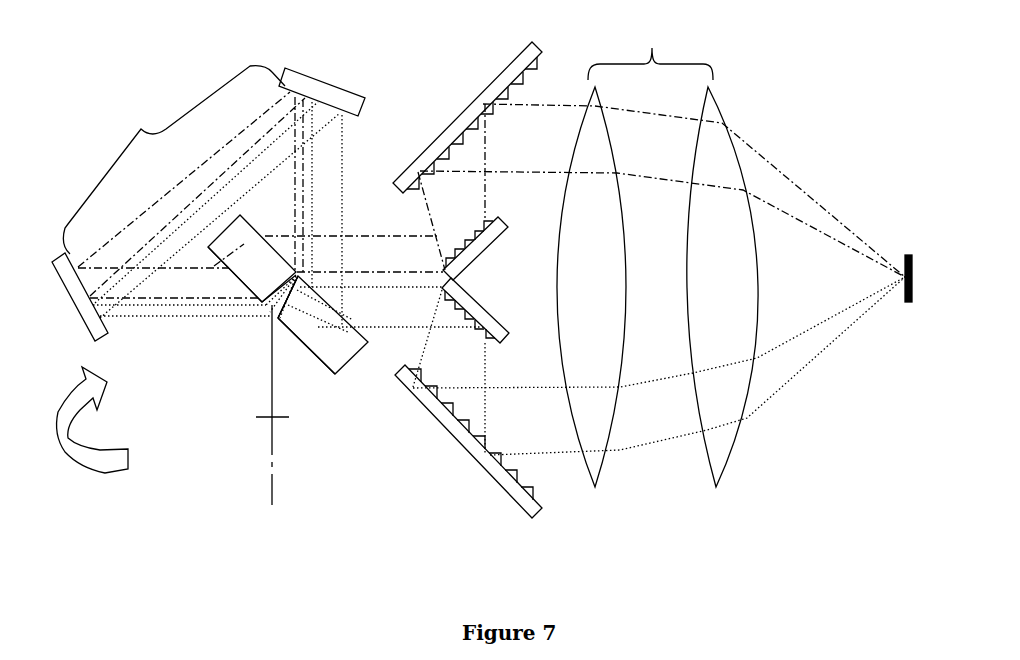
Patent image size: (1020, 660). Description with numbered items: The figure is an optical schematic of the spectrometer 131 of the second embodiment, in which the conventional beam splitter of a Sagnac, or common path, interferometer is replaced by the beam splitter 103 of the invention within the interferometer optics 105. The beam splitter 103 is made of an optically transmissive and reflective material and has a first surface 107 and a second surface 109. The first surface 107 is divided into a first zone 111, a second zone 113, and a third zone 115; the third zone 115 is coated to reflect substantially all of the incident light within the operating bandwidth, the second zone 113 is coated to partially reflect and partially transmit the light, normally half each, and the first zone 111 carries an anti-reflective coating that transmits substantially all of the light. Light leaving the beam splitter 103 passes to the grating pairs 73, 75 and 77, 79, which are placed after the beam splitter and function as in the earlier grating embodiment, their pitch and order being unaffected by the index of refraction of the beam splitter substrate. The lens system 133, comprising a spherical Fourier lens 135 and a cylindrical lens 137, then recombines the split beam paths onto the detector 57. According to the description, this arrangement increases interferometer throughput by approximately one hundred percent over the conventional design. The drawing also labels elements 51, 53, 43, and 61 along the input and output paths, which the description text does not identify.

The aperture stop 43 is at (262, 406).
The scanning mirror 51 is at (68, 300).
The fold mirror 53 is at (328, 85).
The detector 57 is at (903, 245).
The focal point 61 is at (258, 466).
The grating 73 is at (493, 247).
The grating 75 is at (460, 112).
The grating 77 is at (477, 300).
The grating 79 is at (490, 477).
The beam splitter 103 is at (355, 358).
The interferometer optics 105 is at (174, 160).
The first surface 107 is at (327, 378).
The second surface 109 is at (259, 222).
The first zone 111 is at (224, 279).
The second zone 113 is at (260, 315).
The third zone 115 is at (280, 337).
The spectrometer 131 is at (114, 420).
The lens system 133 is at (650, 47).
The spherical (Fourier) lens 135 is at (591, 287).
The cylindrical lens 137 is at (722, 287).